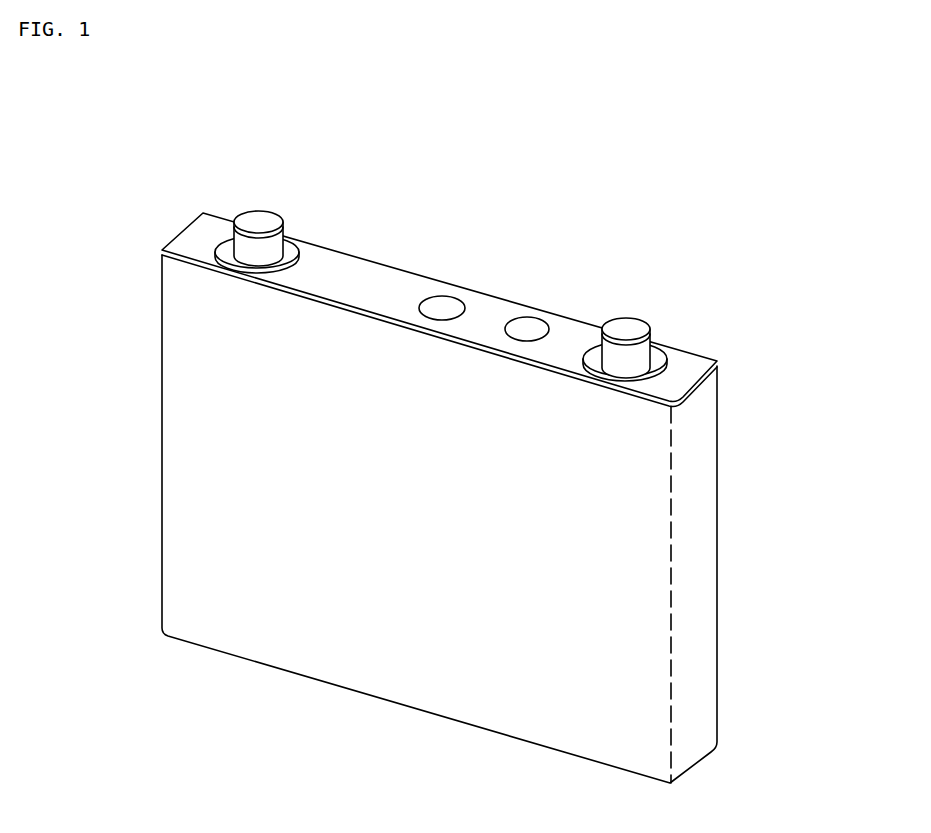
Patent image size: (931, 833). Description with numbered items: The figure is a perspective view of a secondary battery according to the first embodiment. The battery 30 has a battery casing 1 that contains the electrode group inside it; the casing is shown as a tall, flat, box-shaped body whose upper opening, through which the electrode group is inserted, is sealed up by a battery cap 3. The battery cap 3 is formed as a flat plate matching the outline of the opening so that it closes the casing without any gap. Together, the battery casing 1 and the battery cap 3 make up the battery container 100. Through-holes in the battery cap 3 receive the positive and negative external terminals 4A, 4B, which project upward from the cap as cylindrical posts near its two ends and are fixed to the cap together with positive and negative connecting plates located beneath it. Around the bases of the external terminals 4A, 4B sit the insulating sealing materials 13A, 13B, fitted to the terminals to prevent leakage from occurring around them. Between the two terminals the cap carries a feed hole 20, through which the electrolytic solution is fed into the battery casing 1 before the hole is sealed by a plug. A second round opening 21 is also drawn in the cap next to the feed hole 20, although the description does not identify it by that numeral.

The battery container 100 is at (176, 503).
The battery casing 1 is at (710, 595).
The battery cap 3 is at (698, 370).
The battery 30 is at (773, 96).
The positive external terminal 4A is at (248, 212).
The negative external terminal 4B is at (635, 323).
The insulating sealing material 13A is at (227, 238).
The insulating sealing material 13B is at (657, 358).
The feed hole 20 is at (547, 320).
The safety valve 21 is at (452, 297).